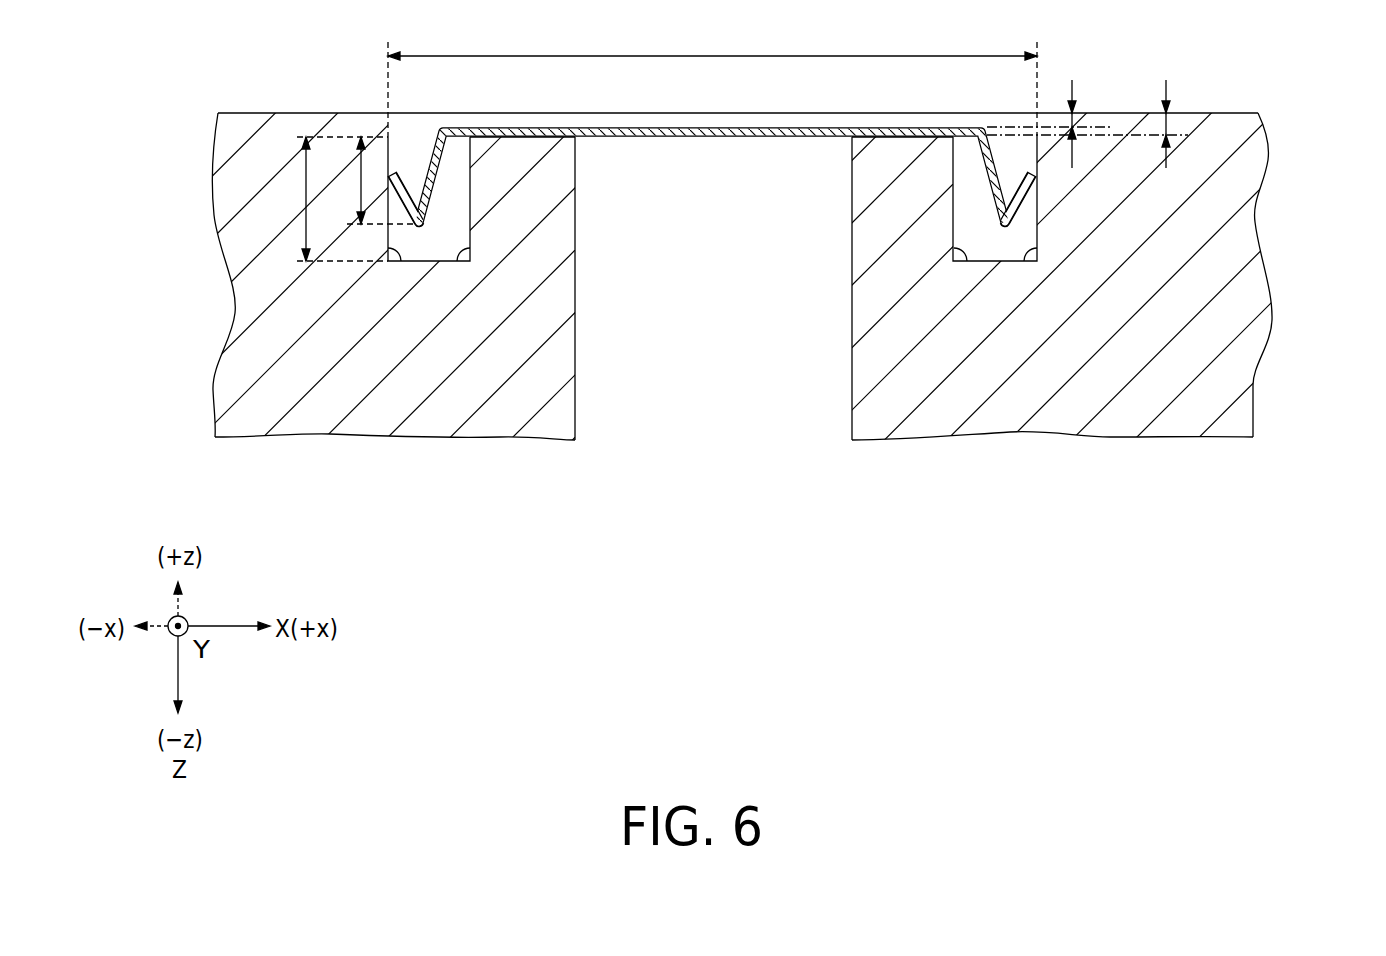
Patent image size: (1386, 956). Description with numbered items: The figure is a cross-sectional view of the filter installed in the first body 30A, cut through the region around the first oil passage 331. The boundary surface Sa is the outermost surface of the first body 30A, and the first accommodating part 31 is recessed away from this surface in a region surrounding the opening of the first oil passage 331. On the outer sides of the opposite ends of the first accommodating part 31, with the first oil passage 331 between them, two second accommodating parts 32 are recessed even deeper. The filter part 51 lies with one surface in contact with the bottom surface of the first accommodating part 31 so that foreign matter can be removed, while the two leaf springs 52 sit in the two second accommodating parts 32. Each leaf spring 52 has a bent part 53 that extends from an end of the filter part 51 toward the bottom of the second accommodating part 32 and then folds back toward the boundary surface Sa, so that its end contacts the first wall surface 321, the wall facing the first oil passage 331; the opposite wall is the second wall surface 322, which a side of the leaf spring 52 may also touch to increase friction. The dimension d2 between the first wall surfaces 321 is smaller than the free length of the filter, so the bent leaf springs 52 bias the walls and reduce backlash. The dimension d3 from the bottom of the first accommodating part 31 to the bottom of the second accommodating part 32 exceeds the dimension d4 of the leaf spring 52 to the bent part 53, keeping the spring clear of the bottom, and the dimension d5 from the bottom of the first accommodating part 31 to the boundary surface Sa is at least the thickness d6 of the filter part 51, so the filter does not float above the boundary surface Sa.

The first body 30A is at (1222, 252).
The boundary surface Sa is at (317, 112).
The first accommodating part 31 is at (520, 137).
The second accommodating part 32 is at (432, 262).
The first wall surface 321 is at (385, 252).
The second wall surface 322 is at (466, 262).
The first oil passage 331 is at (850, 242).
The filter part 51 is at (722, 137).
The leaf spring 52 is at (433, 198).
The bent part 53 is at (418, 228).
The dimension d2 is at (712, 79).
The dimension d3 is at (330, 199).
The dimension d4 is at (371, 180).
The dimension d5 is at (1096, 124).
The thickness d6 is at (1048, 124).